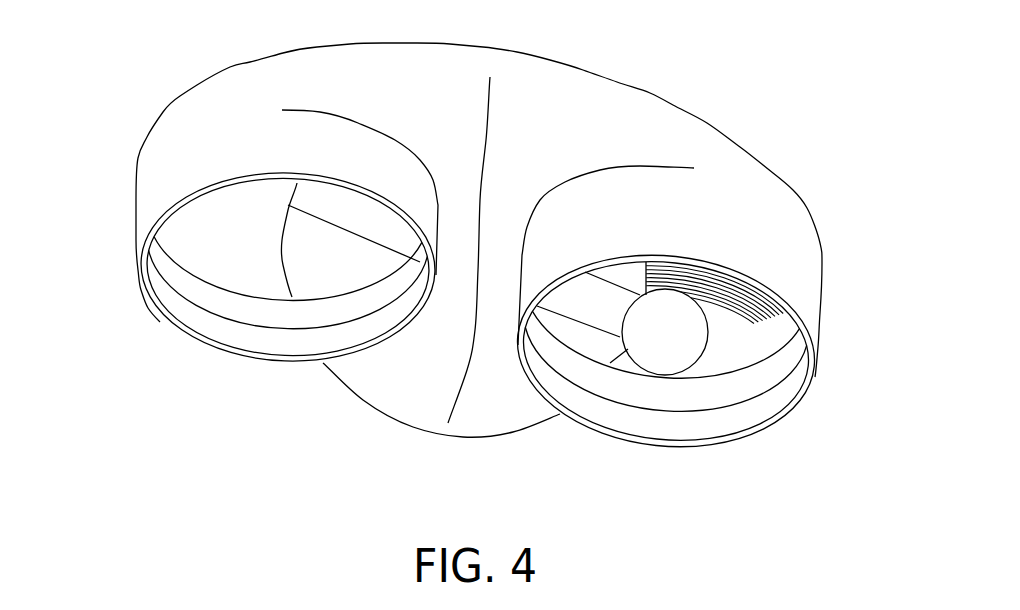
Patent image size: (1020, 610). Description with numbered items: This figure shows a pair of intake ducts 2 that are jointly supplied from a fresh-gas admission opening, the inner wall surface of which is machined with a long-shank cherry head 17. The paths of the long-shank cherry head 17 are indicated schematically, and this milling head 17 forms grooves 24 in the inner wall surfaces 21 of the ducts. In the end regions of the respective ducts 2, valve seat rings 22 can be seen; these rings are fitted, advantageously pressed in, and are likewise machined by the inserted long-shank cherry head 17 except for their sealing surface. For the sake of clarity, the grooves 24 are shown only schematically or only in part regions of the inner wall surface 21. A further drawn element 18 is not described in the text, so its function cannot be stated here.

The intake duct 2 is at (225, 302).
The long-shank cherry head 17 is at (670, 332).
The partition wall 18 is at (283, 282).
The inner wall surface 21 is at (725, 353).
The valve seat ring 22 is at (298, 338).
The groove 24 is at (718, 301).